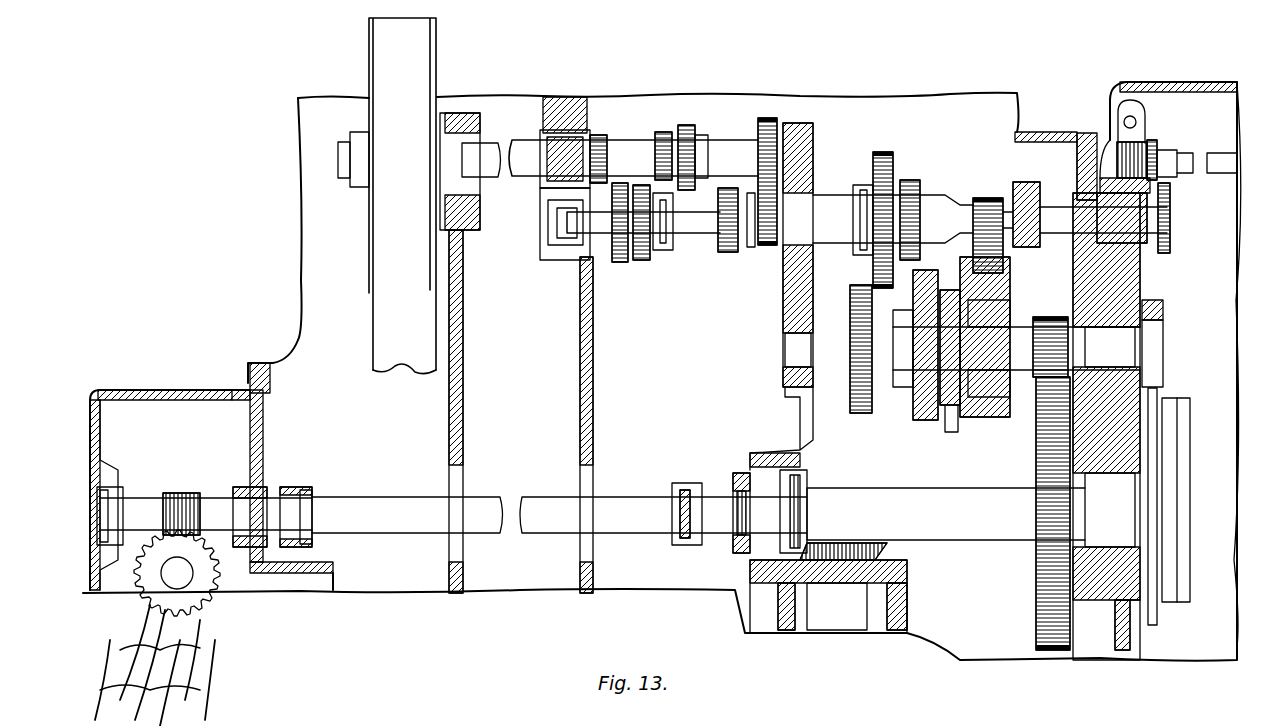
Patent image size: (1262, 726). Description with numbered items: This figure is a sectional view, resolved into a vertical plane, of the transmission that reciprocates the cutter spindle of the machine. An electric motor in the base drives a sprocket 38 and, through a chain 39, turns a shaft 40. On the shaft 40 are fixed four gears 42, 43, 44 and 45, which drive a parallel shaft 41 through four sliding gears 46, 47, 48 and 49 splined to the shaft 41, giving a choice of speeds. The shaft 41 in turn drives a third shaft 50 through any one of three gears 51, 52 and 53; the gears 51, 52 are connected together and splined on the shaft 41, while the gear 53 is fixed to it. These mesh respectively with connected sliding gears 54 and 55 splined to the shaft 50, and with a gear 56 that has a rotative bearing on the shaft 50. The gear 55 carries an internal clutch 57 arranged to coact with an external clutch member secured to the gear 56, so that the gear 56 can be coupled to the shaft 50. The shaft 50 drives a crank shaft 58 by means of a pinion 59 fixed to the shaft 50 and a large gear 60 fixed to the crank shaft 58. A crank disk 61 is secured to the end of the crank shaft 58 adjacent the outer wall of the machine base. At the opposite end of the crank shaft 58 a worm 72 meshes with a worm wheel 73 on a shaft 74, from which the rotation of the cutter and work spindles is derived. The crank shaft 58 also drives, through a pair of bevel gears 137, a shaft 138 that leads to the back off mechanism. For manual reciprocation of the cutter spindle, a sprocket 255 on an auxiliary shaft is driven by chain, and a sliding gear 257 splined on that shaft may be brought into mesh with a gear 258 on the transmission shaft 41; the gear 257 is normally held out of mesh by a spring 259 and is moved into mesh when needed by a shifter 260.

The sprocket 38 is at (369, 287).
The chain 39 is at (378, 350).
The shaft 40 is at (640, 152).
The shaft 41 is at (822, 208).
The gear 42 is at (600, 140).
The gear 43 is at (665, 135).
The gear 44 is at (696, 136).
The gear 45 is at (778, 126).
The sliding gear 46 is at (617, 265).
The sliding gear 47 is at (642, 262).
The sliding gear 48 is at (728, 256).
The sliding gear 49 is at (755, 250).
The third shaft 50 is at (835, 372).
The gear 51 is at (885, 160).
The gear 52 is at (915, 185).
The gear 53 is at (988, 200).
The sliding gear 54 is at (858, 418).
The sliding gear 55 is at (948, 436).
The gear 56 is at (1005, 440).
The internal clutch 57 is at (930, 422).
The crank shaft 58 is at (953, 520).
The pinion 59 is at (1060, 320).
The gear 60 is at (1034, 588).
The crank disk 61 is at (1185, 490).
The worm 72 is at (176, 493).
The worm wheel 73 is at (218, 585).
The shaft 74 is at (186, 560).
The bevel gears 137 is at (828, 545).
The shaft 138 is at (860, 617).
The sprocket 255 is at (1186, 170).
The sliding gear 257 is at (1143, 150).
The gear 258 is at (1172, 243).
The spring 259 is at (1170, 152).
The shifter 260 is at (1122, 132).